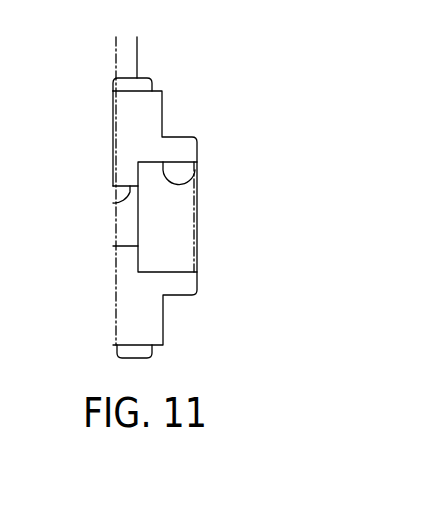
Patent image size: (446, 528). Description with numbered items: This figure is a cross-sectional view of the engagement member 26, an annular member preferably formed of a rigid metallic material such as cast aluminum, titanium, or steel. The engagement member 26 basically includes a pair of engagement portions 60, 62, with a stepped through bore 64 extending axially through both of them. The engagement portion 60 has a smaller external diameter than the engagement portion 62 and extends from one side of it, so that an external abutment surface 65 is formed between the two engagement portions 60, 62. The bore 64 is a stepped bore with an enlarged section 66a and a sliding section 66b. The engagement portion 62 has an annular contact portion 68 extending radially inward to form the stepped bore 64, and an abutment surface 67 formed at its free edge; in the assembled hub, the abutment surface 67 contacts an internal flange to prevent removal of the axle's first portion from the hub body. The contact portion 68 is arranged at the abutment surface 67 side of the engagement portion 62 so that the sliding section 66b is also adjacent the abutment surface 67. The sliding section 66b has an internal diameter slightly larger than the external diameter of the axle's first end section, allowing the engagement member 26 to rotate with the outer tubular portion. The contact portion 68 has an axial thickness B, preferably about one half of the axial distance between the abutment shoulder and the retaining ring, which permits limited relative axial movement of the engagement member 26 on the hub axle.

The engagement member 26 is at (213, 85).
The engagement portion 60 is at (178, 302).
The engagement portion 62 is at (158, 348).
The stepped through bore 64 is at (173, 217).
The external abutment surface 65 is at (162, 108).
The enlarged section 66a is at (195, 180).
The sliding section 66b is at (113, 203).
The abutment surface 67 is at (117, 125).
The annular contact portion 68 is at (130, 257).
The axial thickness B is at (95, 48).